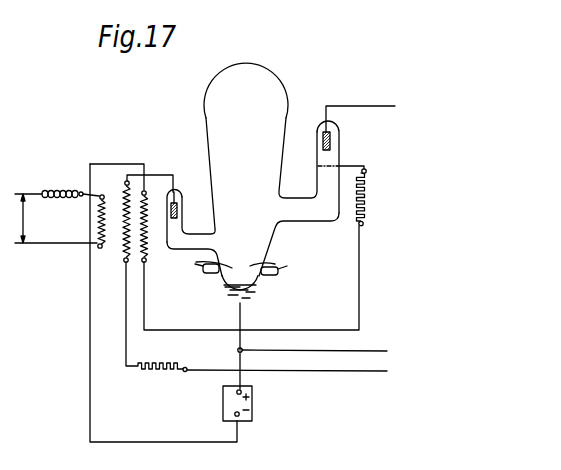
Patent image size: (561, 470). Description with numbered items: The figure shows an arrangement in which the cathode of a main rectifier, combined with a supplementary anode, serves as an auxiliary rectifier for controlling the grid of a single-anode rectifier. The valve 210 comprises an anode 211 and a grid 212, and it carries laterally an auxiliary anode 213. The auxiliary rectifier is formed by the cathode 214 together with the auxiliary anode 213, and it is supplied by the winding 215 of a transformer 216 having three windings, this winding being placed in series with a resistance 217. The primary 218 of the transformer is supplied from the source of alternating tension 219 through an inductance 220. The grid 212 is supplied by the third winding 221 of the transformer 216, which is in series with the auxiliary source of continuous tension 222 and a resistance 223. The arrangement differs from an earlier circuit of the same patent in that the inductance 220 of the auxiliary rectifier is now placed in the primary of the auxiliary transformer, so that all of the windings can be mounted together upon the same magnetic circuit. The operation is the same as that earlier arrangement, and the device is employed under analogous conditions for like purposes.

The valve 210 is at (253, 169).
The anode 211 is at (332, 133).
The grid 212 is at (330, 165).
The auxiliary anode 213 is at (178, 212).
The cathode 214 is at (259, 290).
The winding 215 is at (121, 190).
The transformer having three windings 216 is at (120, 267).
The resistance 217 is at (256, 317).
The primary 218 is at (101, 194).
The source of alternating tension 219 is at (56, 218).
The inductance 220 is at (57, 183).
The third winding 221 is at (251, 278).
The auxiliary source of continuous tension 222 is at (252, 407).
The resistance 223 is at (364, 192).